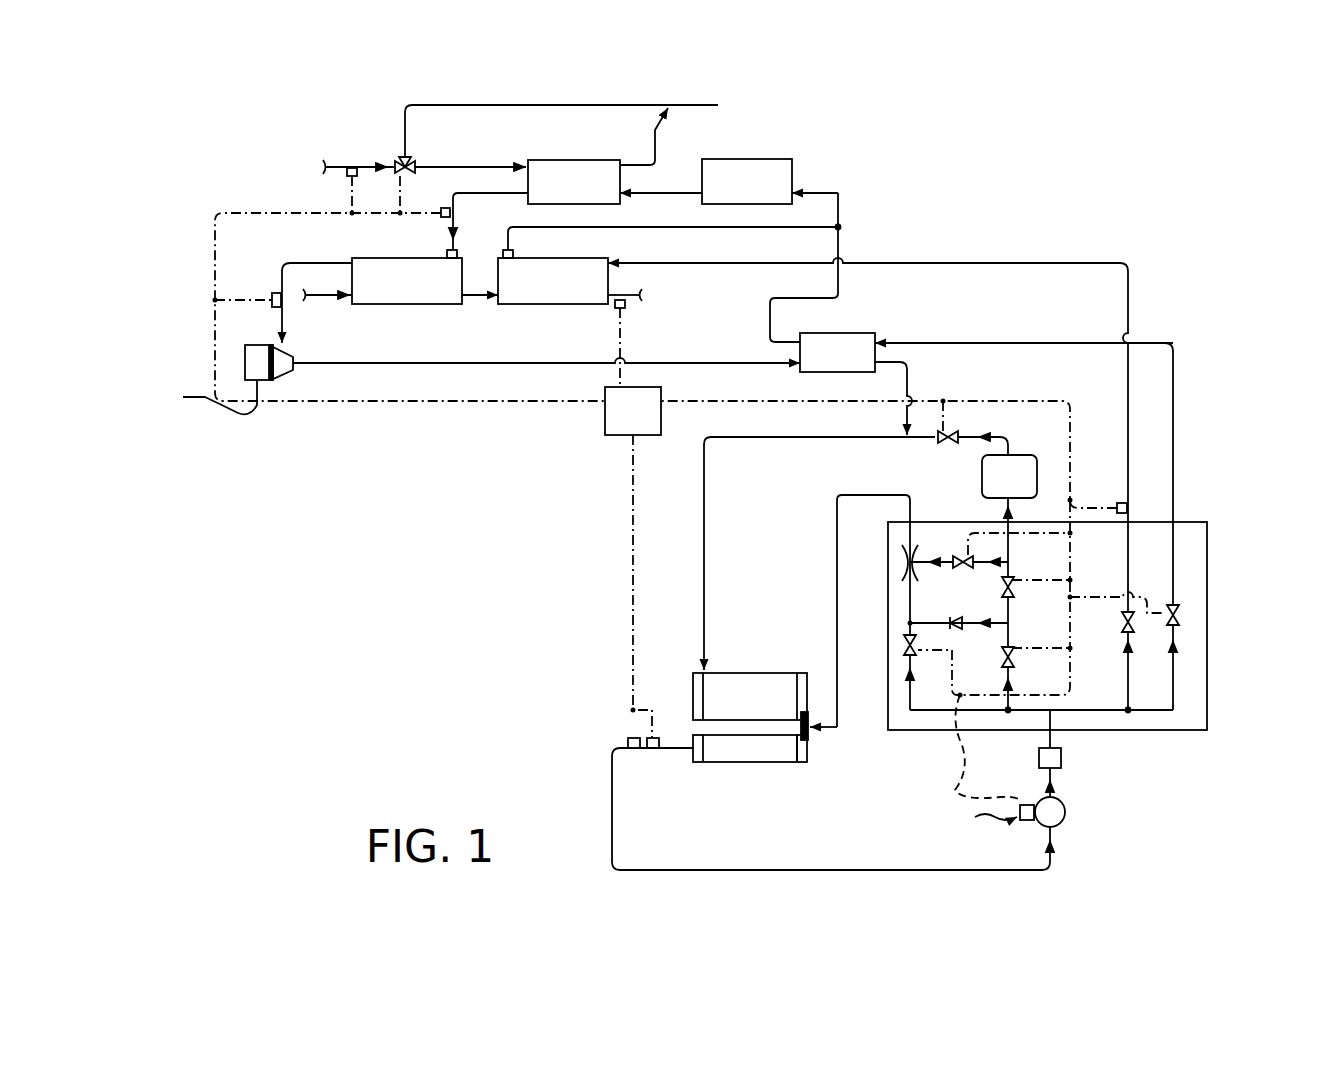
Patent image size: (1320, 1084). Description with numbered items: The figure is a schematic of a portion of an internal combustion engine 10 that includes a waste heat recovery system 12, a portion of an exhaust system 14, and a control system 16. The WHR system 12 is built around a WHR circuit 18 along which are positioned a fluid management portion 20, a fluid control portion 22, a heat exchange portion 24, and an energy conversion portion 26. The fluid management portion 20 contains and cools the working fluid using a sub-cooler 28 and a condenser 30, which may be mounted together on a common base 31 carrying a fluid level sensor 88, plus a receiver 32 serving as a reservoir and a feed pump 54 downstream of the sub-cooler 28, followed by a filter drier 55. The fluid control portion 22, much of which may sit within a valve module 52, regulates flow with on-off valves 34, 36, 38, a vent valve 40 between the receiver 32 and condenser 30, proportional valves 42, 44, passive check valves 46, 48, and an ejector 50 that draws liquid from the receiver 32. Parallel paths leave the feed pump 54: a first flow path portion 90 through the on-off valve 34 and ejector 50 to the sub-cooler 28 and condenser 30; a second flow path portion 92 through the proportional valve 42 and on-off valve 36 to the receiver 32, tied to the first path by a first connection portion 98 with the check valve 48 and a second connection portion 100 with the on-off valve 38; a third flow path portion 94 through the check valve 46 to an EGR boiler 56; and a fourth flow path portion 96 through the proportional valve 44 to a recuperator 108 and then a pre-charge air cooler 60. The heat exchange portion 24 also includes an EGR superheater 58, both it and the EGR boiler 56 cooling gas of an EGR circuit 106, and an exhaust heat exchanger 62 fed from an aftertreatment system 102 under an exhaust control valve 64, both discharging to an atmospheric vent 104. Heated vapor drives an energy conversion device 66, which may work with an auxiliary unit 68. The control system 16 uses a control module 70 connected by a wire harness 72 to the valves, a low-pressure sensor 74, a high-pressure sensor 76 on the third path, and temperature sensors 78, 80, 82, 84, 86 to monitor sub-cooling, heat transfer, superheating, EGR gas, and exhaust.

The internal combustion engine 10 is at (213, 168).
The waste heat recovery system 12 is at (1015, 210).
The exhaust system 14 is at (323, 135).
The control system 16 is at (585, 465).
The WHR circuit 18 is at (708, 551).
The fluid management portion 20 is at (600, 683).
The fluid control portion 22 is at (1175, 780).
The heat exchange portion 24 is at (845, 170).
The energy conversion portion 26 is at (200, 330).
The sub-cooler 28 is at (762, 763).
The condenser 30 is at (760, 672).
The common base 31 is at (808, 759).
The receiver 32 is at (995, 491).
The on-off valve 34 is at (903, 646).
The on-off valve 36 is at (1012, 593).
The on-off valve 38 is at (965, 569).
The vent valve 40 is at (942, 442).
The proportional valve 42 is at (1012, 663).
The proportional valve 44 is at (1178, 618).
The passive check valve 46 is at (1131, 622).
The passive check valve 48 is at (957, 631).
The ejector 50 is at (900, 556).
The valve module 52 is at (1195, 732).
The feed pump 54 is at (1066, 812).
The filter drier 55 is at (1061, 759).
The EGR boiler 56 is at (539, 295).
The EGR superheater 58 is at (393, 295).
The pre-charge air cooler 60 is at (733, 195).
The exhaust heat exchanger 62 is at (560, 196).
The exhaust control valve 64 is at (401, 158).
The energy conversion device 66 is at (274, 382).
The auxiliary unit 68 is at (197, 399).
The control module 70 is at (619, 425).
The wire harness 72 is at (636, 374).
The low-pressure sensor 74 is at (628, 744).
The high-pressure sensor 76 is at (1117, 505).
The first temperature sensor 78 is at (660, 750).
The second temperature sensor 80 is at (441, 216).
The third temperature sensor 82 is at (272, 298).
The fourth temperature sensor 84 is at (615, 306).
The fifth temperature sensor 86 is at (347, 175).
The fluid level sensor 88 is at (809, 731).
The first flow path portion 90 is at (905, 623).
The second flow path portion 92 is at (1010, 706).
The third flow path portion 94 is at (1135, 686).
The fourth flow path portion 96 is at (1180, 670).
The first connection portion 98 is at (925, 612).
The second connection portion 100 is at (940, 553).
The aftertreatment system 102 is at (325, 166).
The atmospheric vent 104 is at (718, 105).
The EGR circuit 106 is at (318, 305).
The recuperator 108 is at (820, 366).